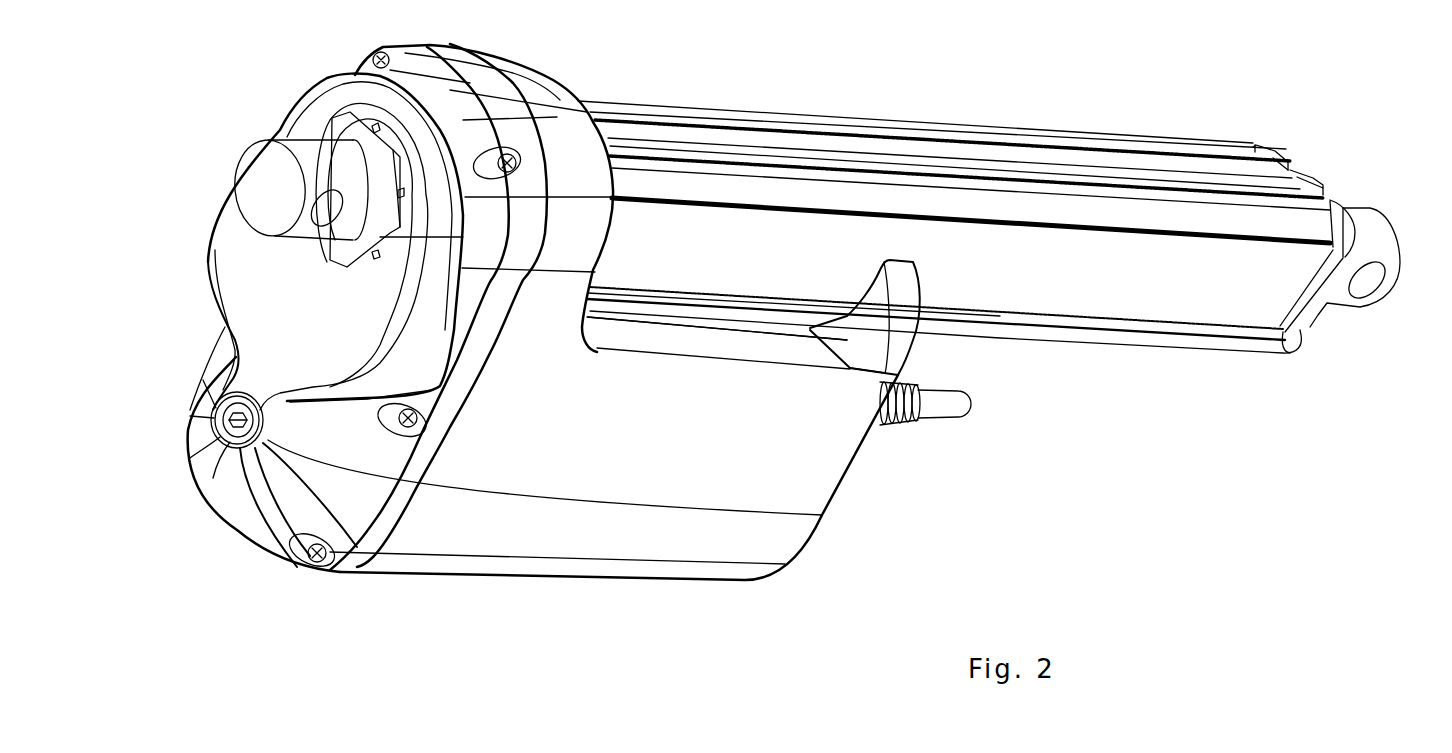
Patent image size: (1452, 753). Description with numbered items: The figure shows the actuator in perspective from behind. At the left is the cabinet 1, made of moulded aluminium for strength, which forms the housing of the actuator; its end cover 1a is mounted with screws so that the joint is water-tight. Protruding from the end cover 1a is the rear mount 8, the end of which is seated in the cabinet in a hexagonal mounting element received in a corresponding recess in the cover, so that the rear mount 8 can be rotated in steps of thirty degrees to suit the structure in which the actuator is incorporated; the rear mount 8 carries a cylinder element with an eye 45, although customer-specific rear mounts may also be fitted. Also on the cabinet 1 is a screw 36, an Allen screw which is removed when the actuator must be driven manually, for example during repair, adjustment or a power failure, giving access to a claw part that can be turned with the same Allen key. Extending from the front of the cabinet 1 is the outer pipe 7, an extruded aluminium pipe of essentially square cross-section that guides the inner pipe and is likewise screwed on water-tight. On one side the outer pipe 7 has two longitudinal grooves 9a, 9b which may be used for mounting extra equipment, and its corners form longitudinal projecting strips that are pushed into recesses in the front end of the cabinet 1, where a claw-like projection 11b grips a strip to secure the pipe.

The cabinet 1 is at (645, 545).
The end cover 1a is at (242, 505).
The outer pipe 7 is at (1147, 310).
The rear mount 8 is at (265, 192).
The eye 45 is at (328, 205).
The screw 36 is at (222, 405).
The longitudinal groove 9a is at (1303, 183).
The longitudinal groove 9b is at (1280, 153).
The claw-like projection 11b is at (883, 333).